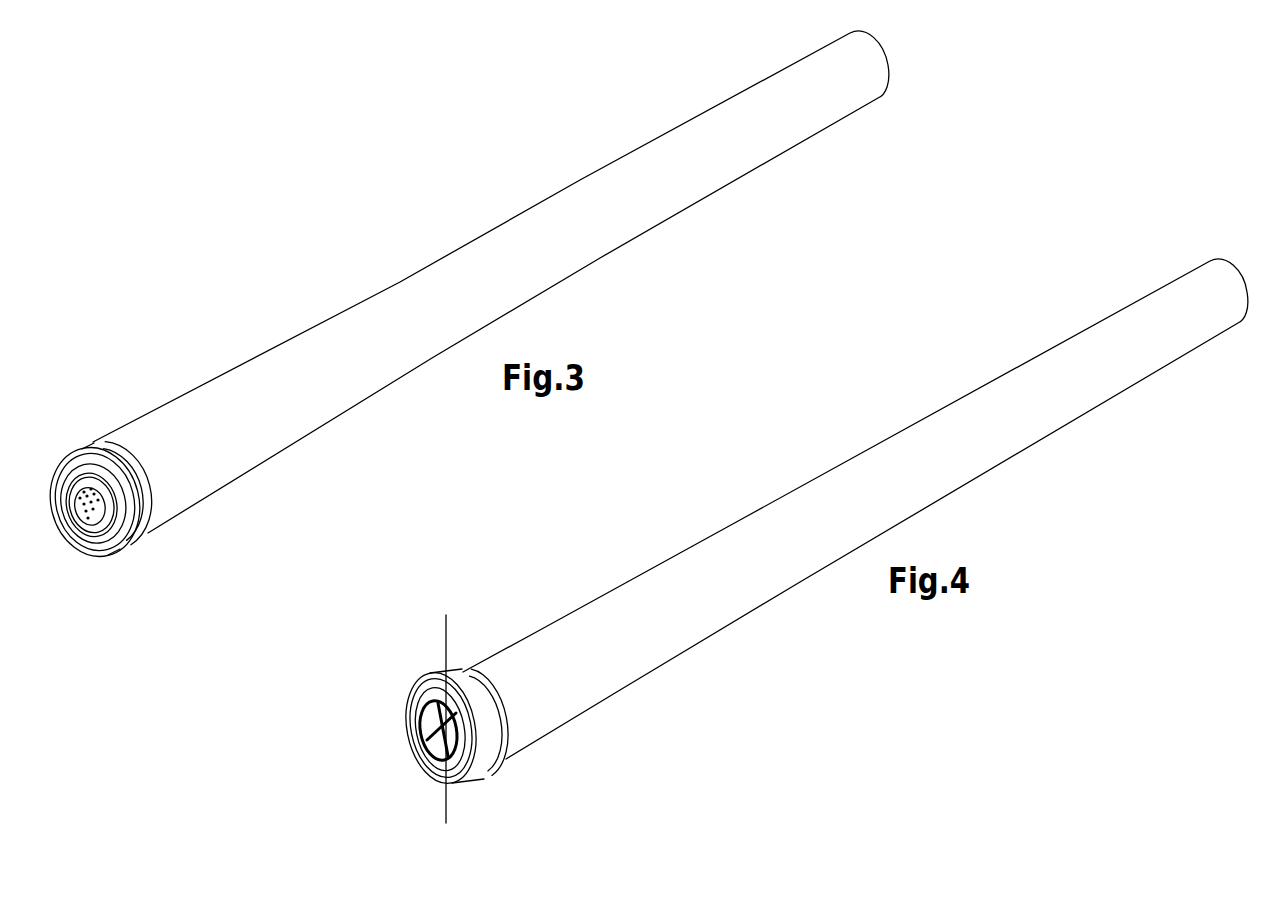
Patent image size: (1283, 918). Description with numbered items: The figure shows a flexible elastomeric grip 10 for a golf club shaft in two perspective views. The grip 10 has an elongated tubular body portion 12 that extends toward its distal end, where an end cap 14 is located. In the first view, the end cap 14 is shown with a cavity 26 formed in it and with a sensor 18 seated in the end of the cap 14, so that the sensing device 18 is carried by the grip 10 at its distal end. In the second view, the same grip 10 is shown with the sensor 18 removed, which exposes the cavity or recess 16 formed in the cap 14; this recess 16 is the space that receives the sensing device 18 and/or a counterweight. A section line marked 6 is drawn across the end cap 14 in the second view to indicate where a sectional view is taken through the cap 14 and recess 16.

In FIG. 3, the golf grip / elongated tubular device 10 is at (356, 272).
In FIG. 4, the golf grip / elongated tubular device 10 is at (637, 549).
In FIG. 3, the elongated tubular body 12 is at (524, 212).
In FIG. 4, the elongated tubular body 12 is at (687, 652).
In FIG. 3, the end cap 14 is at (112, 553).
In FIG. 4, the end cap 14 is at (420, 756).
In FIG. 4, the cross-shaped support bracket 16 is at (431, 705).
In FIG. 3, the inner ring of end cap 18 is at (103, 524).
In FIG. 3, the perforated screen 26 is at (87, 535).
In FIG. 4, the section line 6- 6 is at (457, 637).